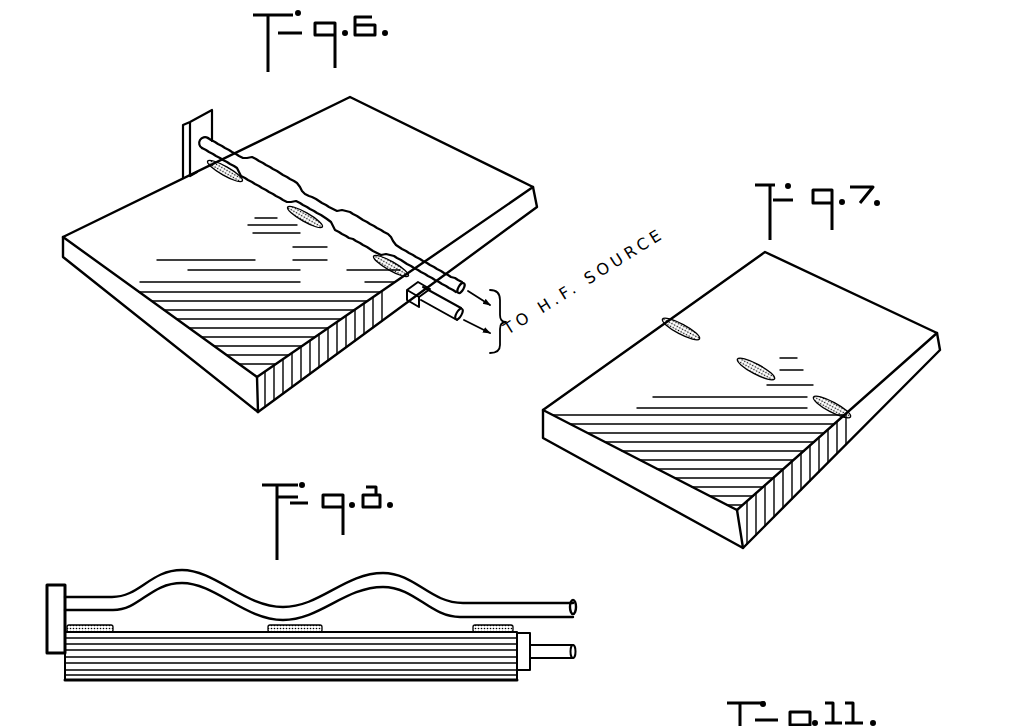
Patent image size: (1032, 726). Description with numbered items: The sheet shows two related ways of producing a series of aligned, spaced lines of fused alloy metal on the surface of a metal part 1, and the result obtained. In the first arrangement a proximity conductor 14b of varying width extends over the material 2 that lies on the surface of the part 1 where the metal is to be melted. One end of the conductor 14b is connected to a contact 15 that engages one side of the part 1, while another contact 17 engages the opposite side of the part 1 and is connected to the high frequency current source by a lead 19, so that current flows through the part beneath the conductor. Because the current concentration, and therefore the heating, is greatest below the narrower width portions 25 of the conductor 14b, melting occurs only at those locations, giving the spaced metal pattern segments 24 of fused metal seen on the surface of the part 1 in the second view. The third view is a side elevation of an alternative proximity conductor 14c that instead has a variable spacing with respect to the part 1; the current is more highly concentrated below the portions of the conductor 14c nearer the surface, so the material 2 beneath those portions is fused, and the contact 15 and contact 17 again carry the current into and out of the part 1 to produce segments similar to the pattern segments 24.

In FIG. 6, the metal part 1 is at (120, 213).
In FIG. 7, the metal part 1 is at (877, 317).
In FIG. 8, the metal part 1 is at (183, 668).
In FIG. 6, the material 2 is at (230, 183).
In FIG. 8, the material 2 is at (98, 633).
In FIG. 6, the proximity conductor of varying width 14b is at (287, 180).
In FIG. 8, the proximity conductor of variable spacing 14c is at (433, 582).
In FIG. 6, the contact 15 is at (207, 113).
In FIG. 8, the contact 15 is at (58, 587).
In FIG. 6, the contact 17 is at (412, 303).
In FIG. 8, the contact 17 is at (530, 667).
In FIG. 6, the lead 19 is at (447, 312).
In FIG. 7, the metal pattern segments 24 is at (735, 357).
In FIG. 6, the narrower width portions 25 is at (237, 150).